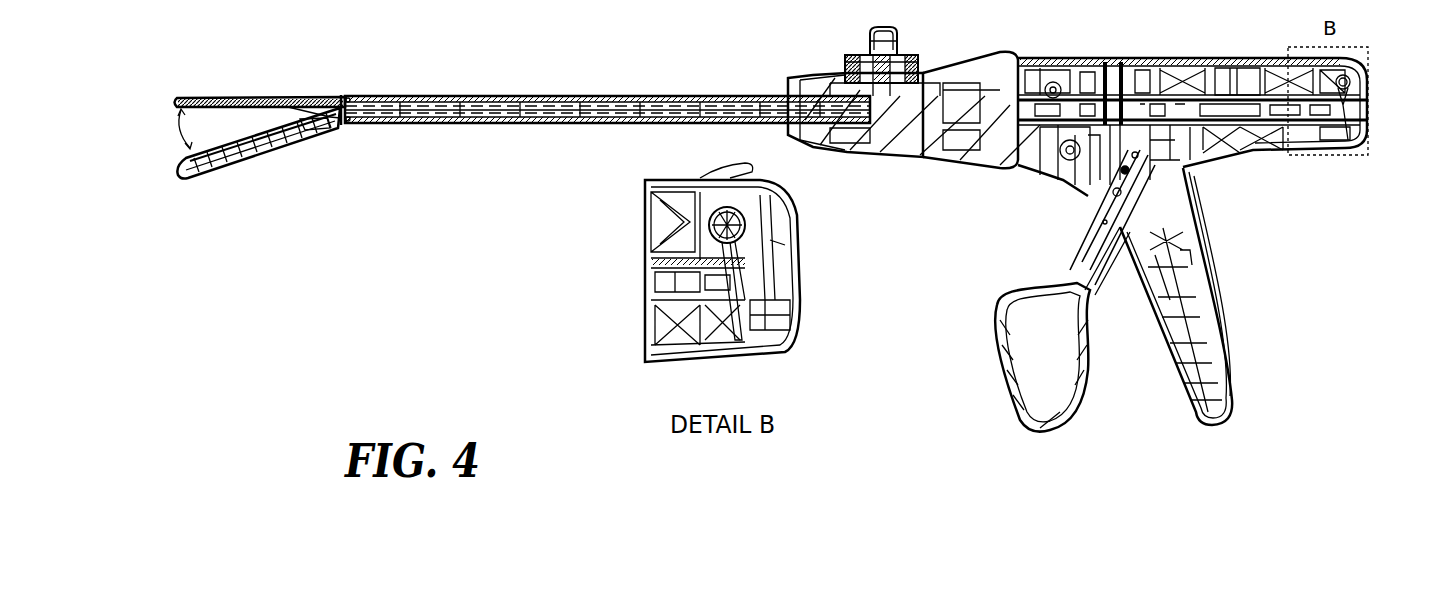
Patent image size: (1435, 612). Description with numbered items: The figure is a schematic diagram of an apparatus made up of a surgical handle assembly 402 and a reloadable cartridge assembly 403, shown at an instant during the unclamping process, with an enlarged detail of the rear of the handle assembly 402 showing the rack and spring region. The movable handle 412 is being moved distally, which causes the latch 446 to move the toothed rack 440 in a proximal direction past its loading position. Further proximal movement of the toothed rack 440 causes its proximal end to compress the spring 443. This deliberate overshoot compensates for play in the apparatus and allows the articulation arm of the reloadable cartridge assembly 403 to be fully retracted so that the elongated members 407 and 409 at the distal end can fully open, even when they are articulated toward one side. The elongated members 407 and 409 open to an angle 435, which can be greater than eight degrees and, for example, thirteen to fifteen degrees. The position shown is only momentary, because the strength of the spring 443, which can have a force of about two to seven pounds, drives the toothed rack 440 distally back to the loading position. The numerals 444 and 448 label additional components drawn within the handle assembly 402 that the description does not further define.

The surgical handle assembly 402 is at (1240, 160).
The reloadable cartridge assembly 403 is at (544, 94).
The elongated member 407 is at (232, 168).
The elongated member 409 is at (222, 97).
The movable handle 412 is at (1000, 360).
The angle 435 is at (178, 135).
The toothed rack 440 is at (1205, 65).
The spring 443 is at (1362, 100).
The actuation member 444 is at (1103, 105).
The latch 446 is at (1120, 105).
The stop member 448 is at (1345, 150).